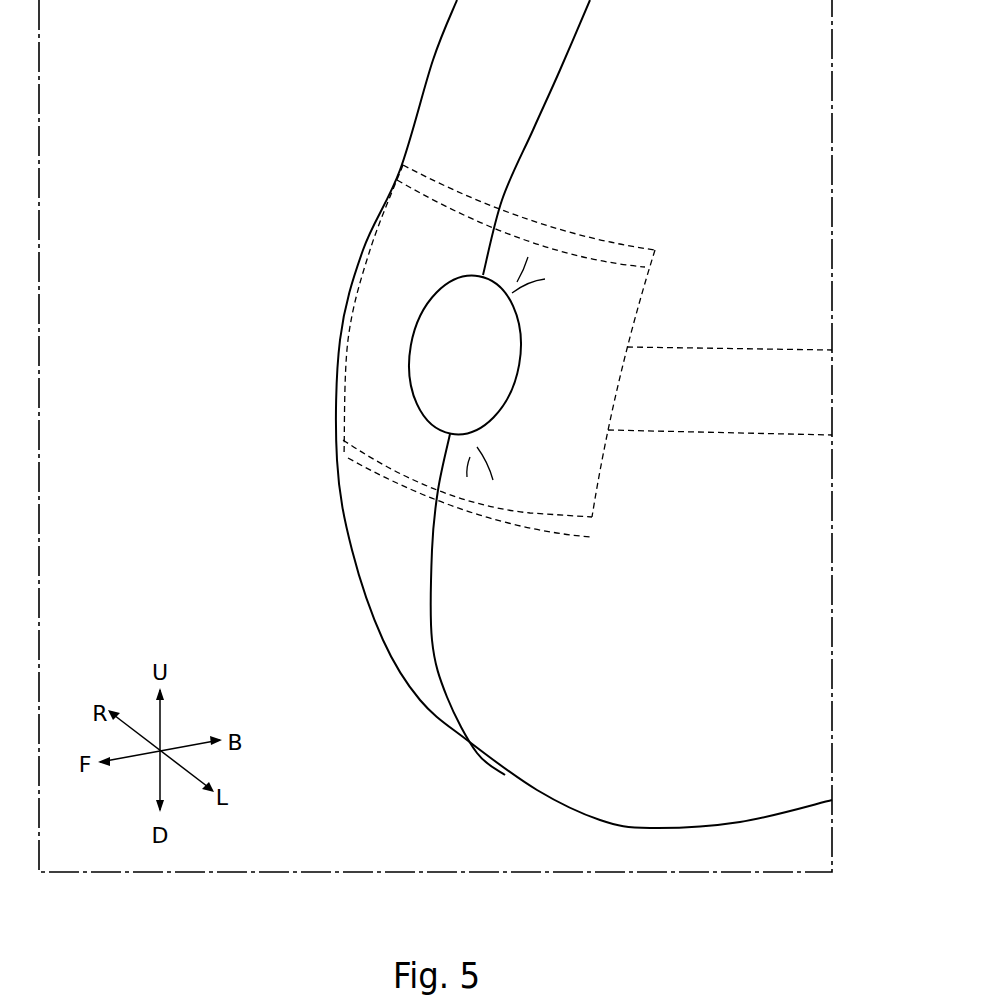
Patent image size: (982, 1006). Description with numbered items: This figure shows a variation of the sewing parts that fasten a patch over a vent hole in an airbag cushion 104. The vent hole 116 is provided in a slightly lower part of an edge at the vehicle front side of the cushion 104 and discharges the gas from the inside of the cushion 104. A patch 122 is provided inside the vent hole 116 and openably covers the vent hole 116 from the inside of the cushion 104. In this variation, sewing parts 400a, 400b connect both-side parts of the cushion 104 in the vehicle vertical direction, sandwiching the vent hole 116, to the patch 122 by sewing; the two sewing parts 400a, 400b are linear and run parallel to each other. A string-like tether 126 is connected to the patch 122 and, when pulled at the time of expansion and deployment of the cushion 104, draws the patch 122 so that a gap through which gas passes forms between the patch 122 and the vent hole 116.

The cushion 104 is at (432, 62).
The vent hole 116 is at (415, 383).
The patch 122 is at (640, 308).
The tether 126 is at (728, 420).
The sewing part 400a is at (585, 250).
The sewing part 400b is at (530, 517).